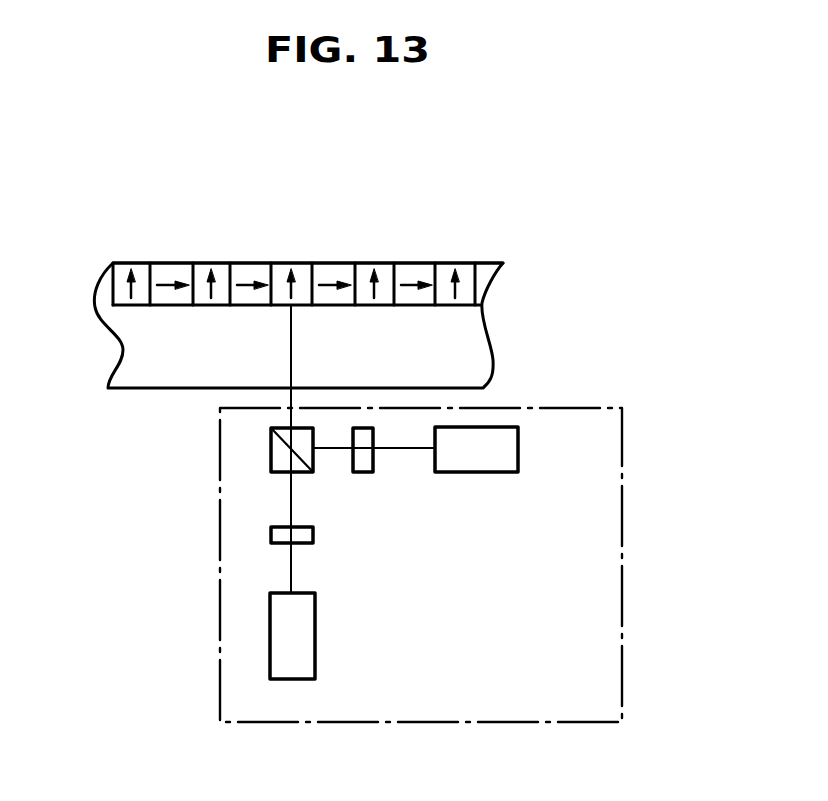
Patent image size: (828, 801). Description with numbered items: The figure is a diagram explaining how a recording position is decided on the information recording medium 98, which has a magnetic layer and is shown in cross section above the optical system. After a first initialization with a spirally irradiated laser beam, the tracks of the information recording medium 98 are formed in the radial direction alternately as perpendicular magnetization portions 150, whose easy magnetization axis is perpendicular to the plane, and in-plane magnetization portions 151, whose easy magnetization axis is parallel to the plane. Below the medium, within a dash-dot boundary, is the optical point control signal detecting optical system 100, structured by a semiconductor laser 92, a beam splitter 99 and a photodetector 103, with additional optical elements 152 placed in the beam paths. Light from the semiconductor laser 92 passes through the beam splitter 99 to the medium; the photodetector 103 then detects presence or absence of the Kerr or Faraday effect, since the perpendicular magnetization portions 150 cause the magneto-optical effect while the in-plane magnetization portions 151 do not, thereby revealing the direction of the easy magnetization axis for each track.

The perpendicular magnetization portion 150 is at (121, 270).
The in-plane magnetization portion 151 is at (175, 268).
The information recording medium 98 is at (494, 346).
The beam splitter 99 is at (271, 450).
The lens 152 is at (363, 472).
The photodetector 103 is at (503, 443).
The semiconductor laser 92 is at (315, 655).
The optical point control signal detecting optical system 100 is at (622, 608).